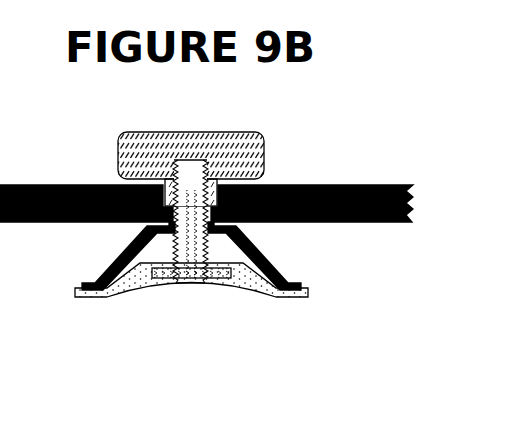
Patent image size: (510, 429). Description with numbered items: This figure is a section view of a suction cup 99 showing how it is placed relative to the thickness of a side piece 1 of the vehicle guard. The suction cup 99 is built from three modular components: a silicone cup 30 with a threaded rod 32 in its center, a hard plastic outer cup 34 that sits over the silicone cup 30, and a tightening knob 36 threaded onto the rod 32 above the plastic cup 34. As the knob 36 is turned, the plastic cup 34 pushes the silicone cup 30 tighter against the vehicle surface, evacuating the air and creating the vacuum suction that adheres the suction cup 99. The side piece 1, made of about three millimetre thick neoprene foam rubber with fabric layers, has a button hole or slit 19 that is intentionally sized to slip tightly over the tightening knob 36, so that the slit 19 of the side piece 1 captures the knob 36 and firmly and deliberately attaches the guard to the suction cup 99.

The side piece 1 is at (42, 238).
The button hole or slit 19 is at (190, 195).
The silicone cup 30 is at (253, 292).
The threaded rod 32 is at (176, 255).
The hard plastic outer cup 34 is at (265, 263).
The tightening knob 36 is at (263, 162).
The suction cup 99 is at (140, 316).